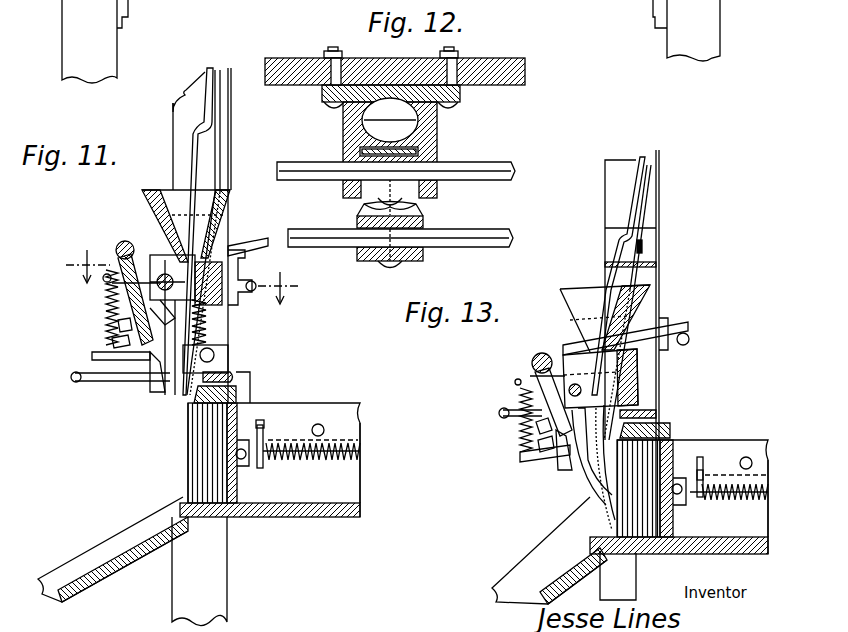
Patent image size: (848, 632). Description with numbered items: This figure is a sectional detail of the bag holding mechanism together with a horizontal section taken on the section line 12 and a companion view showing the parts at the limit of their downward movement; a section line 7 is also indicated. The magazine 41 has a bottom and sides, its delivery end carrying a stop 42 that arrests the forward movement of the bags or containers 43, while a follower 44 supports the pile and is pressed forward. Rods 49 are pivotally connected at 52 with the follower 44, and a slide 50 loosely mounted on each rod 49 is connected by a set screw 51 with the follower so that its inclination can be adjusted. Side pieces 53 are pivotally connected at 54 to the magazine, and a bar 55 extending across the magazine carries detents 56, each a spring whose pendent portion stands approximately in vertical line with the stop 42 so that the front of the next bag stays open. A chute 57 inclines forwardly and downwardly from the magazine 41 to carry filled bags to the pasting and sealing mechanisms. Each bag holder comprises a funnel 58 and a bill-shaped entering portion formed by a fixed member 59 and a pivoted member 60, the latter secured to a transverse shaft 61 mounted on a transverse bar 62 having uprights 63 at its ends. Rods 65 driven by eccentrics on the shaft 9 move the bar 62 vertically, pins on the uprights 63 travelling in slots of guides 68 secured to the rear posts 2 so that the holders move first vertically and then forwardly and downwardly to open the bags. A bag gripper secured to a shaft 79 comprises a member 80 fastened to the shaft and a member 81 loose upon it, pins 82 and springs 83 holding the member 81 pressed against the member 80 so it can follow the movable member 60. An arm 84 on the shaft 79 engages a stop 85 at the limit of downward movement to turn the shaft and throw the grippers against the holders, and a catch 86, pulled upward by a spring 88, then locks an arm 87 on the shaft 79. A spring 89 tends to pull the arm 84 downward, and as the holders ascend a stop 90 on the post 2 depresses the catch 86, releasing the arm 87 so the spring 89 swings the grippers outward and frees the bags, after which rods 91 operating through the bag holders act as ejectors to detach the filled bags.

In FIG. 11, the rear post 2 is at (68, 52).
In FIG. 13, the rear post 2 is at (606, 172).
In FIG. 11, the section line 7 is at (158, 0).
In FIG. 13, the shaft 9 is at (654, 38).
In FIG. 11, the section line 12 is at (185, 277).
In FIG. 11, the magazine 41 is at (322, 518).
In FIG. 13, the magazine 41 is at (752, 555).
In FIG. 11, the stop 42 is at (186, 494).
In FIG. 11, the bag or container 43 is at (200, 462).
In FIG. 13, the bag or container 43 is at (624, 530).
In FIG. 11, the follower 44 is at (245, 518).
In FIG. 13, the follower 44 is at (692, 555).
In FIG. 11, the rod 49 is at (362, 454).
In FIG. 13, the rod 49 is at (726, 503).
In FIG. 11, the slide 50 is at (298, 453).
In FIG. 13, the slide 50 is at (712, 478).
In FIG. 11, the set screw 51 is at (264, 446).
In FIG. 13, the set screw 51 is at (704, 485).
In FIG. 11, the pivotal connection 52 is at (246, 467).
In FIG. 13, the pivotal connection 52 is at (683, 498).
In FIG. 11, the side piece 53 is at (252, 378).
In FIG. 11, the pivot 54 is at (324, 428).
In FIG. 13, the pivot 54 is at (747, 457).
In FIG. 11, the bar 55 is at (232, 368).
In FIG. 13, the bar 55 is at (660, 412).
In FIG. 11, the detent 56 is at (240, 381).
In FIG. 13, the detent 56 is at (665, 430).
In FIG. 11, the chute 57 is at (118, 558).
In FIG. 13, the chute 57 is at (528, 584).
In FIG. 11, the funnel 58 is at (159, 190).
In FIG. 13, the funnel 58 is at (580, 289).
In FIG. 11, the fixed member 59 is at (214, 353).
In FIG. 12, the fixed member 59 is at (372, 72).
In FIG. 13, the fixed member 59 is at (600, 472).
In FIG. 11, the movable member 60 is at (160, 350).
In FIG. 12, the movable member 60 is at (420, 156).
In FIG. 13, the movable member 60 is at (586, 458).
In FIG. 11, the transverse shaft 61 is at (165, 272).
In FIG. 12, the transverse shaft 61 is at (502, 166).
In FIG. 13, the transverse shaft 61 is at (600, 378).
In FIG. 11, the transverse bar 62 is at (208, 283).
In FIG. 12, the transverse bar 62 is at (522, 58).
In FIG. 13, the transverse bar 62 is at (640, 362).
In FIG. 11, the upright 63 is at (232, 352).
In FIG. 13, the upright 63 is at (640, 360).
In FIG. 11, the rod 65 is at (222, 128).
In FIG. 13, the rod 65 is at (652, 178).
In FIG. 13, the guide 68 is at (696, 262).
In FIG. 11, the shaft 79 is at (125, 242).
In FIG. 12, the shaft 79 is at (512, 237).
In FIG. 13, the shaft 79 is at (540, 354).
In FIG. 11, the gripper member 80 is at (112, 283).
In FIG. 12, the gripper member 80 is at (402, 262).
In FIG. 13, the gripper member 80 is at (530, 376).
In FIG. 11, the gripper member 81 is at (140, 350).
In FIG. 12, the gripper member 81 is at (424, 222).
In FIG. 13, the gripper member 81 is at (560, 446).
In FIG. 11, the pin 82 is at (118, 326).
In FIG. 13, the pin 82 is at (536, 430).
In FIG. 11, the spring 83 is at (106, 312).
In FIG. 13, the spring 83 is at (545, 440).
In FIG. 11, the arm 84 is at (244, 243).
In FIG. 13, the arm 84 is at (672, 326).
In FIG. 11, the stop 85 is at (256, 284).
In FIG. 13, the stop 85 is at (690, 340).
In FIG. 11, the catch 86 is at (92, 356).
In FIG. 13, the catch 86 is at (545, 458).
In FIG. 11, the arm 87 is at (112, 341).
In FIG. 13, the arm 87 is at (542, 445).
In FIG. 11, the spring 88 is at (104, 282).
In FIG. 13, the spring 88 is at (516, 385).
In FIG. 11, the spring 89 is at (207, 327).
In FIG. 11, the stop 90 is at (76, 382).
In FIG. 13, the stop 90 is at (508, 412).
In FIG. 11, the rod 91 is at (193, 140).
In FIG. 13, the rod 91 is at (641, 157).